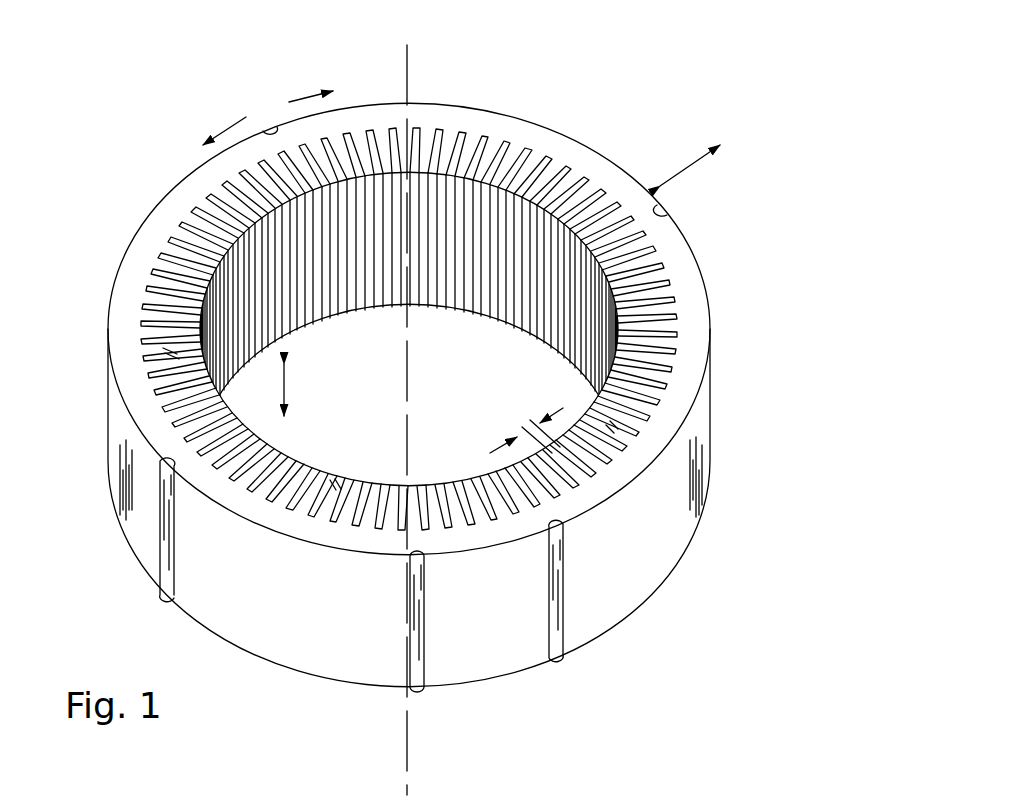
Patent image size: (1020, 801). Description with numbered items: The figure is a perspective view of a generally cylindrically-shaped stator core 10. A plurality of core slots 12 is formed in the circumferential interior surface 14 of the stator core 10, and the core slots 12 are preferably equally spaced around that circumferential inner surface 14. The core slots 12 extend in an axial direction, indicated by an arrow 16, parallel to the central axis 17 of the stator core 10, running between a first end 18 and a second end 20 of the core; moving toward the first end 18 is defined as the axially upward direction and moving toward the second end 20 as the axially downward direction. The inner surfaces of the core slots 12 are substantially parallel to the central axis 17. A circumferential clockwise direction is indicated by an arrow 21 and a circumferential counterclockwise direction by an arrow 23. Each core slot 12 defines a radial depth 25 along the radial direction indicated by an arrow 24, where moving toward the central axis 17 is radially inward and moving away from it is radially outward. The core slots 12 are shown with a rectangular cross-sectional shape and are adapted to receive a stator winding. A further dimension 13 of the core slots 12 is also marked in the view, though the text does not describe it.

The stator core 10 is at (581, 90).
The core slots 12 is at (210, 197).
The slot width 13 is at (557, 410).
The circumferential interior surface 14 is at (172, 412).
The arrow indicating axial direction 16 is at (288, 382).
The central axis 17 is at (408, 752).
The first end 18 is at (587, 170).
The second end 20 is at (293, 675).
The arrow indicating circumferential clockwise direction 21 is at (302, 93).
The arrow indicating circumferential counterclockwise direction 23 is at (230, 127).
The arrow indicating radial direction 24 is at (690, 165).
The radial depth 25 is at (168, 352).